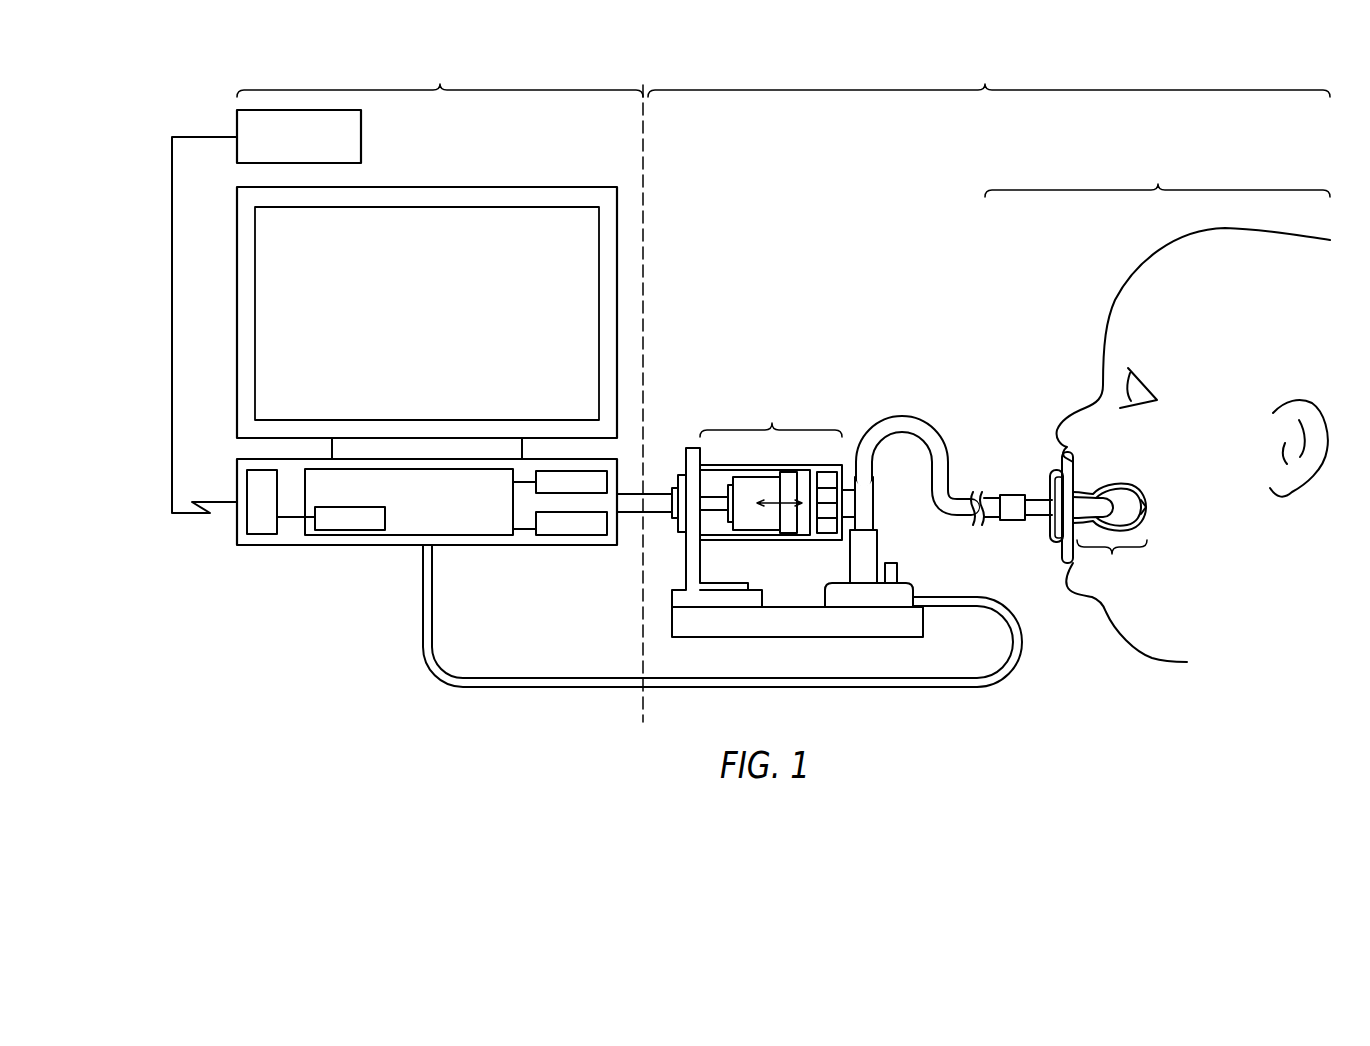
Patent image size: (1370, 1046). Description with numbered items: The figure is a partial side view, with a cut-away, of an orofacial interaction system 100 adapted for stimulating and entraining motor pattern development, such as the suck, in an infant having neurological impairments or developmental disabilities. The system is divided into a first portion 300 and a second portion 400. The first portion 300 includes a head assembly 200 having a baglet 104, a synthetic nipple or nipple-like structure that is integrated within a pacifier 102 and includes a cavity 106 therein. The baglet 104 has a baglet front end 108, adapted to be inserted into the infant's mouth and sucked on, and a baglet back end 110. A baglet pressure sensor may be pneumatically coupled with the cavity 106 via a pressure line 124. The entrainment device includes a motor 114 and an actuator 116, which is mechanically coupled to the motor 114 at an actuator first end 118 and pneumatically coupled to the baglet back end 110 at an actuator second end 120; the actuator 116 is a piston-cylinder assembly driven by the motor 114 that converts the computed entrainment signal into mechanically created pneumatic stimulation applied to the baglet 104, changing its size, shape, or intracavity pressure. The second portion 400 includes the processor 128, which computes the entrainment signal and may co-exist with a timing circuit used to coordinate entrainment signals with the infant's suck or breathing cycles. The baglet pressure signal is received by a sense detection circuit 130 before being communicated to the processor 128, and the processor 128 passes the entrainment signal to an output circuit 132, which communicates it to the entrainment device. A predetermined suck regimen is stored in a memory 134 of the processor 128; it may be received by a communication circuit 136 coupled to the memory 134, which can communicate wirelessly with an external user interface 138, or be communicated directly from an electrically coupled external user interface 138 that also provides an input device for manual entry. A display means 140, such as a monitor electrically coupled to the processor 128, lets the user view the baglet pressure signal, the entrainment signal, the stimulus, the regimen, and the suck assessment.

The orofacial interaction system 100 is at (249, 51).
The pacifier 102 is at (1112, 554).
The baglet 104 is at (1140, 488).
The cavity 106 is at (1117, 492).
The baglet front end 108 is at (1149, 508).
The baglet back end 110 is at (1050, 537).
The motor 114 is at (677, 485).
The actuator 116 is at (772, 422).
The actuator first end 118 is at (715, 493).
The actuator second end 120 is at (875, 503).
The pressure line 124 is at (926, 421).
The processor 128 is at (464, 527).
The sense detection circuit 130 is at (590, 470).
The output circuit 132 is at (569, 537).
The memory 134 is at (350, 530).
The communication circuit 136 is at (261, 530).
The external user interface 138 is at (362, 138).
The display means 140 is at (270, 312).
The head assembly 200 is at (1158, 182).
The first portion 300 is at (985, 86).
The second portion 400 is at (440, 86).